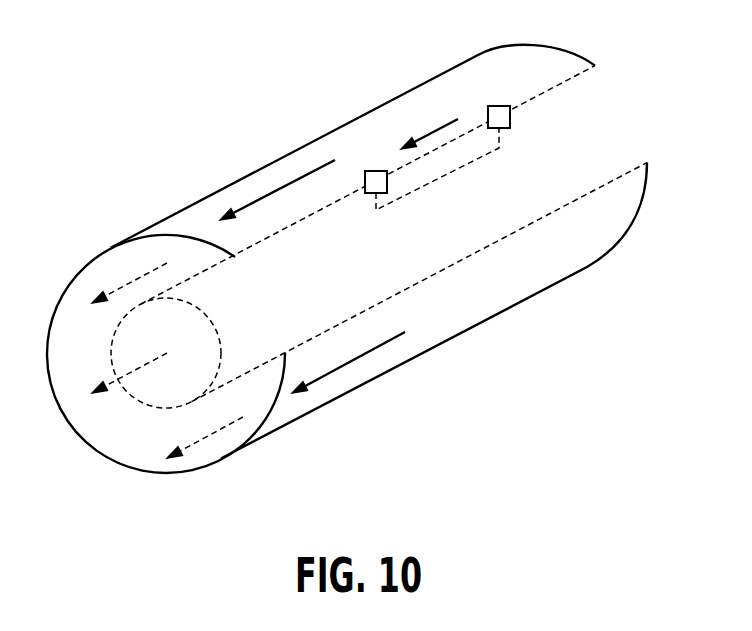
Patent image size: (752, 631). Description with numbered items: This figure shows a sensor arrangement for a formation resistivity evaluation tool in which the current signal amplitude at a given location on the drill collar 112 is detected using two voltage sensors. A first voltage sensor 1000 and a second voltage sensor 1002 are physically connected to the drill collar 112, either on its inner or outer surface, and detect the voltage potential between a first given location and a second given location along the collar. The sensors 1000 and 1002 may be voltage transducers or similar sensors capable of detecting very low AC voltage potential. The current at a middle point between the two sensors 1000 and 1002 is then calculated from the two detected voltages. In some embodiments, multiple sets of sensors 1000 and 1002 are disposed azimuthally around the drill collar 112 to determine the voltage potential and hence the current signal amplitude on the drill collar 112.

The drill collar 112 is at (552, 43).
The first voltage sensor 1000 is at (375, 170).
The second voltage sensor 1002 is at (497, 106).